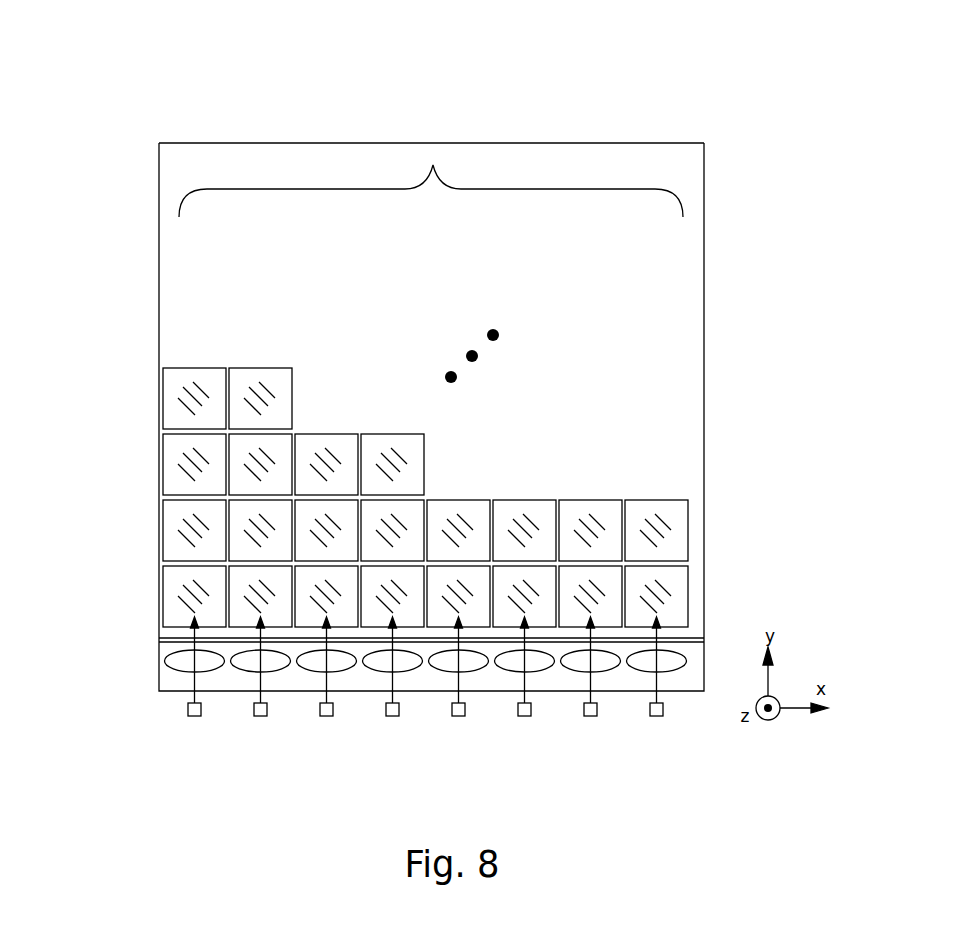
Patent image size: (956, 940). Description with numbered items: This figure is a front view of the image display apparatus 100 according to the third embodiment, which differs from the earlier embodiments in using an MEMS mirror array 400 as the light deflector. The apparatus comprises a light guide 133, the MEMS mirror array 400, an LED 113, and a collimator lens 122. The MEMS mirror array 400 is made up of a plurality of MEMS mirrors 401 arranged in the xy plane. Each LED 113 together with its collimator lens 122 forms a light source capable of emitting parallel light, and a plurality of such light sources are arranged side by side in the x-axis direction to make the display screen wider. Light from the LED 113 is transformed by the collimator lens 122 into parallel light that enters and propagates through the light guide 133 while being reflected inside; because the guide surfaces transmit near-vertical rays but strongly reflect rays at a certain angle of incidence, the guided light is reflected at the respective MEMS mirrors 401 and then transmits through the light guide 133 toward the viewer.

The image display apparatus 100 is at (202, 103).
The light guide 133 is at (283, 165).
The MEMS mirror array 400 is at (433, 165).
The MEMS mirror 401 is at (172, 398).
The collimator lens 122 is at (168, 661).
The LED 113 is at (193, 716).